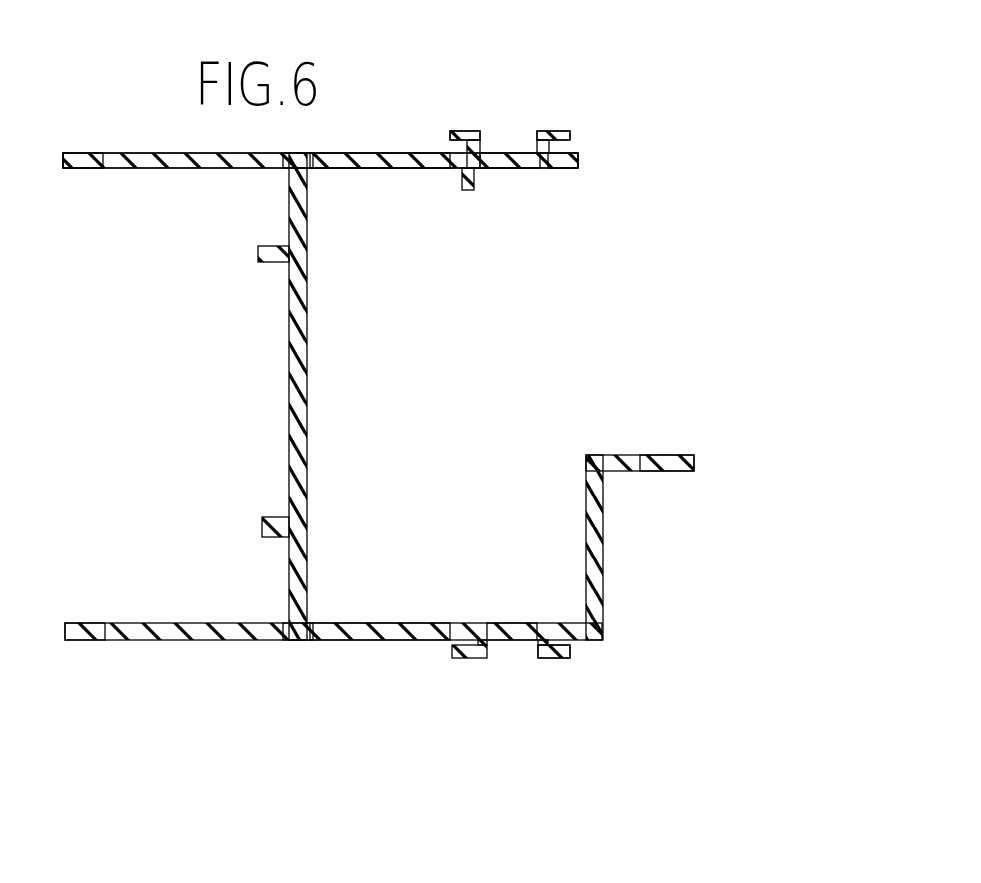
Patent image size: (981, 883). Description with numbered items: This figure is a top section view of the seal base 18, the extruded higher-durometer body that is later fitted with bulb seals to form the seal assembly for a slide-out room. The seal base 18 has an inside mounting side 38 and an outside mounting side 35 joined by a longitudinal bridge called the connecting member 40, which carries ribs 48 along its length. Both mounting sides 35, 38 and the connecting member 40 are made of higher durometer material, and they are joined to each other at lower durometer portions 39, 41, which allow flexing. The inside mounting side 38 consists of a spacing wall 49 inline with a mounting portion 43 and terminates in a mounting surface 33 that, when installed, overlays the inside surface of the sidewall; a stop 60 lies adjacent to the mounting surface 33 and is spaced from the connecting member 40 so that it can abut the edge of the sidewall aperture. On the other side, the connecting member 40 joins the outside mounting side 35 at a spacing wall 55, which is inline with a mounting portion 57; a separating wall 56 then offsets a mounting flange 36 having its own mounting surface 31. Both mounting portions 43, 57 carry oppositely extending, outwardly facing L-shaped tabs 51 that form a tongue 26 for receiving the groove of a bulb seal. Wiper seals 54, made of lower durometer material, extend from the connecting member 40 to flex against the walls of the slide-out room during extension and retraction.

The seal base 18 is at (320, 84).
The tongue 26 is at (600, 391).
The mounting surface 31 is at (647, 434).
The mounting surface 33 is at (525, 202).
The outside mounting side 35 is at (333, 592).
The mounting flange 36 is at (679, 506).
The inside mounting side 38 is at (320, 110).
The lower durometer portion 39 is at (284, 664).
The connecting member 40 is at (252, 396).
The lower durometer portion 41 is at (277, 137).
The mounting portion 43 is at (607, 164).
The ribs 48 is at (230, 391).
The spacing wall 49 is at (380, 196).
The L-shaped tabs 51 is at (510, 401).
The wiper seals 54 is at (93, 396).
The spacing wall 55 is at (380, 678).
The separating wall 56 is at (553, 547).
The mounting portion 57 is at (519, 596).
The stop 60 is at (466, 194).